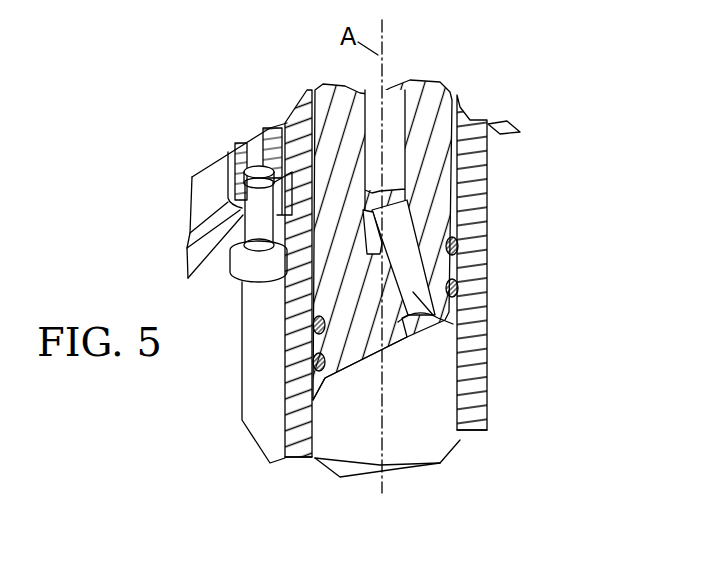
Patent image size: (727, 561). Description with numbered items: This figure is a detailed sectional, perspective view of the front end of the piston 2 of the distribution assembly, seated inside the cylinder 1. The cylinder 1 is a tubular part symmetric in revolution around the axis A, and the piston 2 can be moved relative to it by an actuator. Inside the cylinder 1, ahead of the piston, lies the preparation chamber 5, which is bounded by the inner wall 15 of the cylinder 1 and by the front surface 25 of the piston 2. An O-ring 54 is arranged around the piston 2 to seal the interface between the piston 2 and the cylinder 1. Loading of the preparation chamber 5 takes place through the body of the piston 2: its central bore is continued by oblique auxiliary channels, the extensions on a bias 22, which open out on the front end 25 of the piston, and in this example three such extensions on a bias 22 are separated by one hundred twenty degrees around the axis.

The cylinder 1 is at (487, 200).
The piston 2 is at (450, 92).
The preparation chamber 5 is at (366, 418).
The inner wall 15 is at (446, 420).
The extension on a bias 22 is at (447, 327).
The front surface 25 is at (390, 343).
The O-ring 54 is at (490, 250).